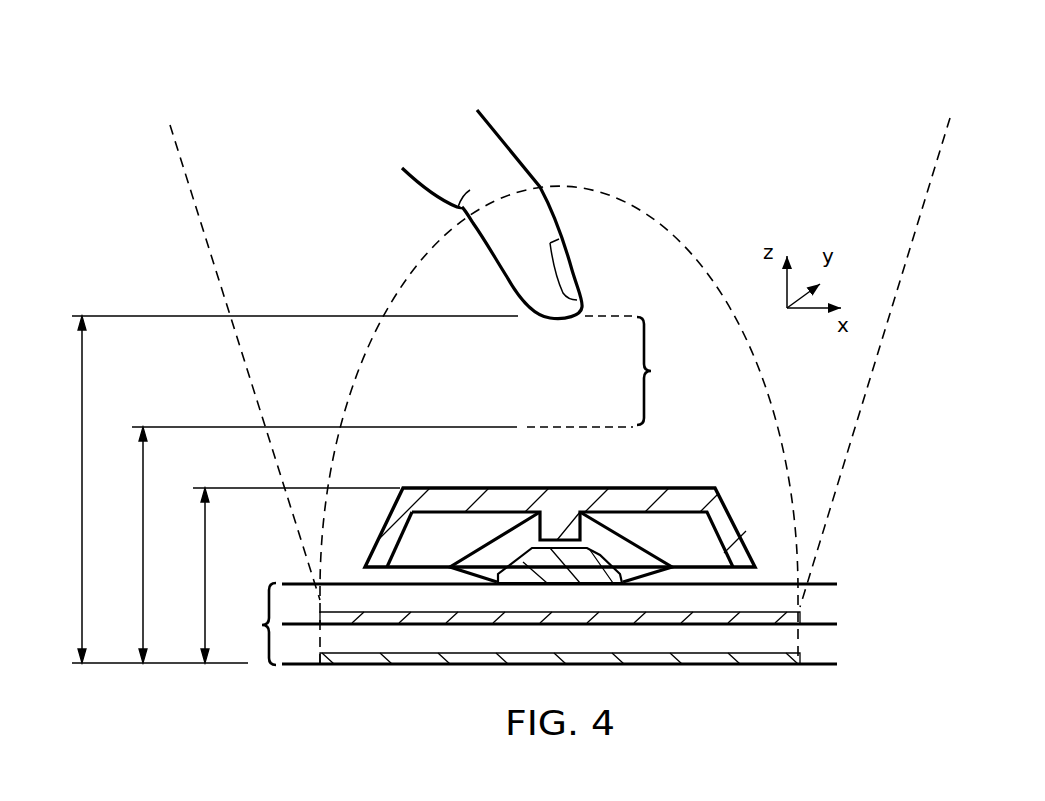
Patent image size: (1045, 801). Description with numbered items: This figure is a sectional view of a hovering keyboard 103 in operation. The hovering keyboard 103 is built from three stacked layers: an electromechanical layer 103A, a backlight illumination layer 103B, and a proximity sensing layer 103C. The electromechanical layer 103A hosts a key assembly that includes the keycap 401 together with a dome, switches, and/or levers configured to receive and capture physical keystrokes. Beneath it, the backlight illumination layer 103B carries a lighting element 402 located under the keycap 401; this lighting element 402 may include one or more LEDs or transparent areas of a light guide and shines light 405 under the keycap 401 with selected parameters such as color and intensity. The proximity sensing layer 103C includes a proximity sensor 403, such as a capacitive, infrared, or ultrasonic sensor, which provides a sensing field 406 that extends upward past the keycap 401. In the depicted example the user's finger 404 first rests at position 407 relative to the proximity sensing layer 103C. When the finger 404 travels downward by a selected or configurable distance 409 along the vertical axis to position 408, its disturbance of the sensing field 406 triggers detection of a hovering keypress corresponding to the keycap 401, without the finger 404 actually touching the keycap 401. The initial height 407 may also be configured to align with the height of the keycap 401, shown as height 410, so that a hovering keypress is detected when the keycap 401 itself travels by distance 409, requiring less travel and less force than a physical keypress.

The hovering keyboard 103 is at (572, 644).
The electromechanical layer 103A is at (818, 580).
The backlight illumination layer 103B is at (818, 620).
The proximity sensing layer 103C is at (818, 660).
The keycap 401 is at (690, 487).
The lighting element 402 is at (430, 618).
The proximity sensor 403 is at (703, 660).
The finger 404 is at (500, 138).
The light 405 is at (853, 437).
The sensing field 406 is at (632, 205).
The position 407 is at (82, 525).
The position 408 is at (143, 548).
The distance 409 is at (643, 370).
The height 410 is at (205, 577).